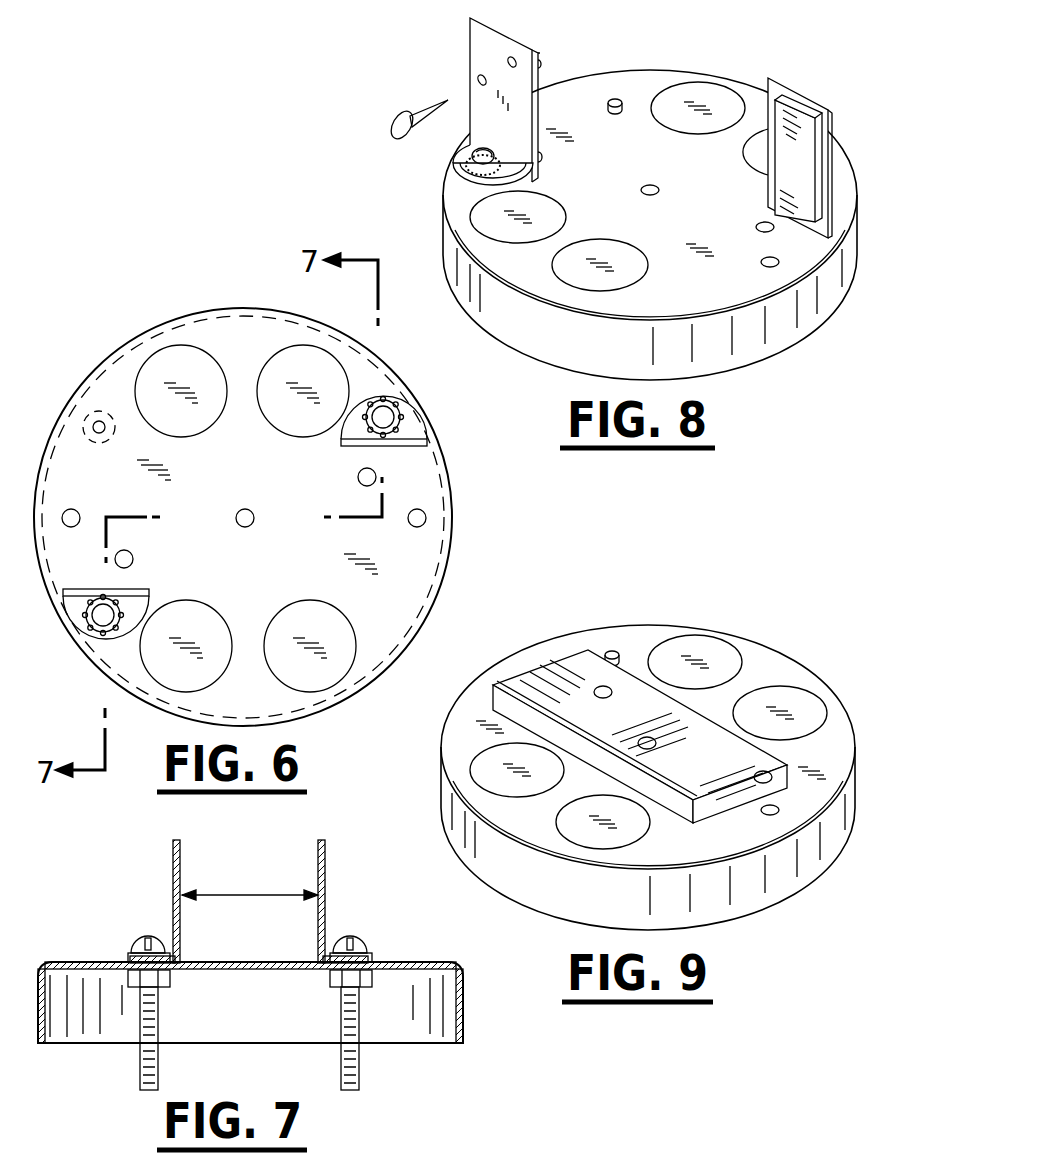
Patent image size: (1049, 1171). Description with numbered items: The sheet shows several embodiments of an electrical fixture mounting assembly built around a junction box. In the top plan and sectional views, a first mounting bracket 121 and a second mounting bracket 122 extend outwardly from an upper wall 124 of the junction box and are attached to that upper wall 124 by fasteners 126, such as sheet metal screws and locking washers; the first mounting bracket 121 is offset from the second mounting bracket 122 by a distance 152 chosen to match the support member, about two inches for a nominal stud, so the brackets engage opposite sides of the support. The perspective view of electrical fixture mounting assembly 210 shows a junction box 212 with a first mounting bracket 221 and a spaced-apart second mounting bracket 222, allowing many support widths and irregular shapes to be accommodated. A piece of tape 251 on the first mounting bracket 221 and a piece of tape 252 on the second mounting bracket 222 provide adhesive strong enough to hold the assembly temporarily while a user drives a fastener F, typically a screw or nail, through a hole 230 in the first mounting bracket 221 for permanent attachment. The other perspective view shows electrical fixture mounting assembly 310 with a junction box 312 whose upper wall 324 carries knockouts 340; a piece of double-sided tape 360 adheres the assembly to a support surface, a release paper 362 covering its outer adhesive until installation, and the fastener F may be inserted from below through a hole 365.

In FIG. 6, the upper wall 124 is at (282, 573).
In FIG. 7, the upper wall 124 is at (250, 1002).
In FIG. 7, the first mounting bracket 121 is at (172, 855).
In FIG. 7, the second mounting bracket 122 is at (326, 858).
In FIG. 7, the fasteners 126 is at (133, 942).
In FIG. 7, the distance 152 is at (246, 890).
In FIG. 8, the electrical fixture mounting assembly 210 is at (589, 205).
In FIG. 8, the junction box 212 is at (782, 345).
In FIG. 8, the first mounting bracket 221 is at (458, 95).
In FIG. 8, the second mounting bracket 222 is at (757, 129).
In FIG. 8, the hole 230 is at (480, 82).
In FIG. 8, the tape 251 is at (545, 75).
In FIG. 8, the tape 252 is at (792, 150).
In FIG. 8, the fastener F is at (392, 128).
In FIG. 9, the electrical fixture mounting assembly 310 is at (610, 743).
In FIG. 9, the junction box 312 is at (610, 749).
In FIG. 9, the upper wall 324 is at (470, 723).
In FIG. 9, the knockouts 340 is at (700, 652).
In FIG. 9, the tape 360 is at (647, 767).
In FIG. 9, the release paper 362 is at (565, 675).
In FIG. 9, the hole 365 is at (618, 690).